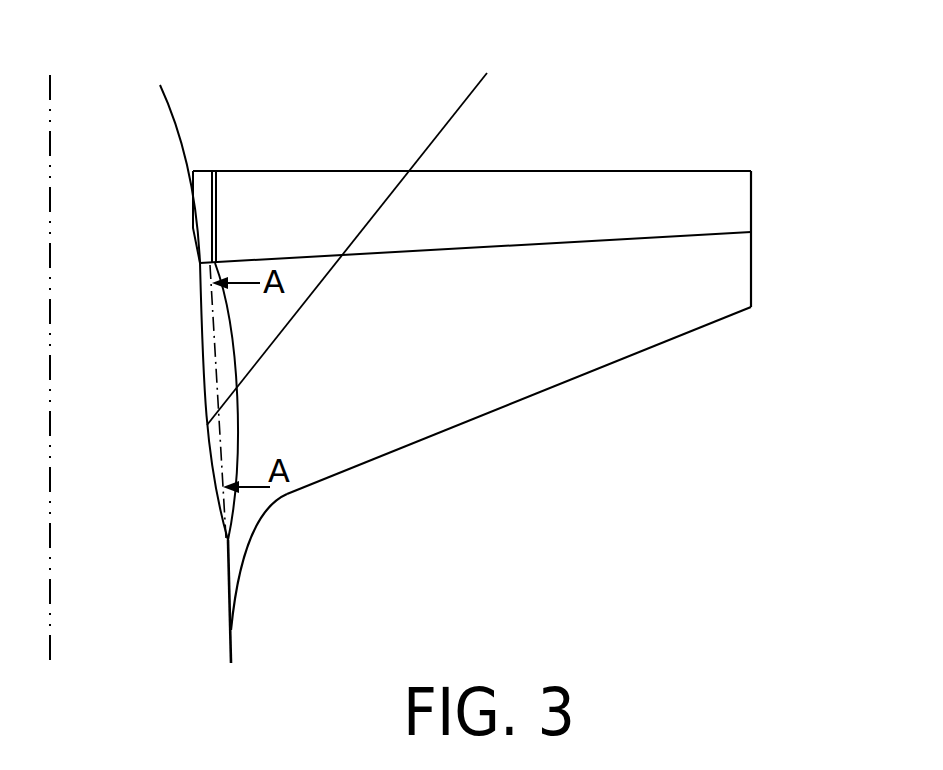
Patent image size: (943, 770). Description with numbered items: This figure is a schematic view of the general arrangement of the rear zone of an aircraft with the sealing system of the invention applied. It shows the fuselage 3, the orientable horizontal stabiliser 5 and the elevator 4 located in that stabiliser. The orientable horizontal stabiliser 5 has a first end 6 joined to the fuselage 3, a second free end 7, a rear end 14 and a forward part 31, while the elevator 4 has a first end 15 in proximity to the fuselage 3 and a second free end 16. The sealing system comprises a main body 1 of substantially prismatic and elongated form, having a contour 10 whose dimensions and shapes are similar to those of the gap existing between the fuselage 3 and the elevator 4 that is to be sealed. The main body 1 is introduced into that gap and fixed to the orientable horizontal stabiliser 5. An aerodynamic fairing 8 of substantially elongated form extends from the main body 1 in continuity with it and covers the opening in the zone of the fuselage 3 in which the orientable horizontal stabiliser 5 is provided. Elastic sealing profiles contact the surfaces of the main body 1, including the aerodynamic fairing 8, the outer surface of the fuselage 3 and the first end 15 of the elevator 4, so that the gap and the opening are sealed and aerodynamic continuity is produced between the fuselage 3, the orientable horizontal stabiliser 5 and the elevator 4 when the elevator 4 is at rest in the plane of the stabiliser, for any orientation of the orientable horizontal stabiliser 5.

The main body 1 is at (205, 187).
The fuselage 3 is at (150, 568).
The elevator 4 is at (534, 213).
The orientable horizontal stabiliser 5 is at (487, 332).
The first end of the orientable horizontal stabiliser 6 is at (356, 232).
The second end of the orientable horizontal stabiliser 7 is at (751, 280).
The aerodynamic fairing 8 is at (230, 430).
The contour of the main body 10 is at (203, 188).
The rear end of the orientable horizontal stabiliser 14 is at (622, 240).
The first end of the elevator 15 is at (216, 202).
The second end of the elevator 16 is at (751, 197).
The forward part of the orientable horizontal stabiliser 31 is at (303, 488).